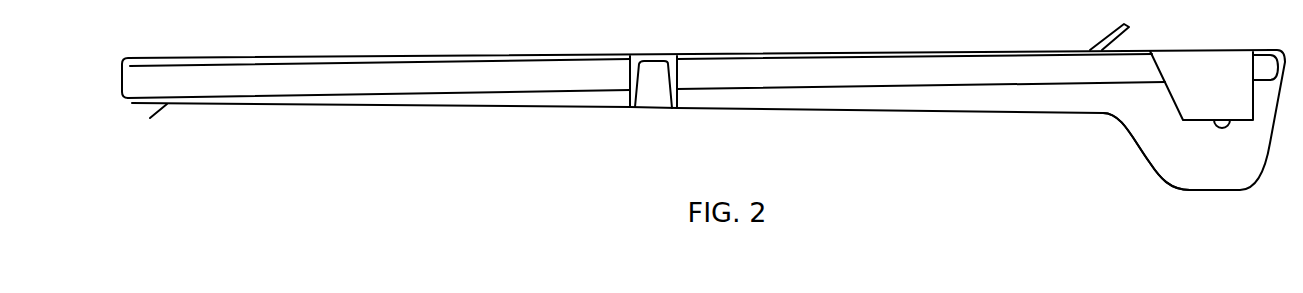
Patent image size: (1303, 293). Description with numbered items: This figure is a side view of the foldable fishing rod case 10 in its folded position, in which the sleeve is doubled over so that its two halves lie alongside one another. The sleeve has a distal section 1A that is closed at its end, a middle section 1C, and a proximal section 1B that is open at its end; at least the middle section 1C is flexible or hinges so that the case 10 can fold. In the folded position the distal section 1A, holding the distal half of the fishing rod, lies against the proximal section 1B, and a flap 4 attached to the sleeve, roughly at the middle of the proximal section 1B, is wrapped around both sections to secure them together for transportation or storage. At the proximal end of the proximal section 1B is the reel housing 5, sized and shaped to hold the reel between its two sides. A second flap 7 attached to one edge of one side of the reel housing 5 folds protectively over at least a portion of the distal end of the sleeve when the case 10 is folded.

The foldable fishing rod case 10 is at (500, 134).
The distal section 1A is at (828, 77).
The proximal section 1B is at (982, 97).
The middle section 1C is at (137, 98).
The flap 4 is at (652, 100).
The reel housing 5 is at (1148, 143).
The second flap 7 is at (1205, 108).